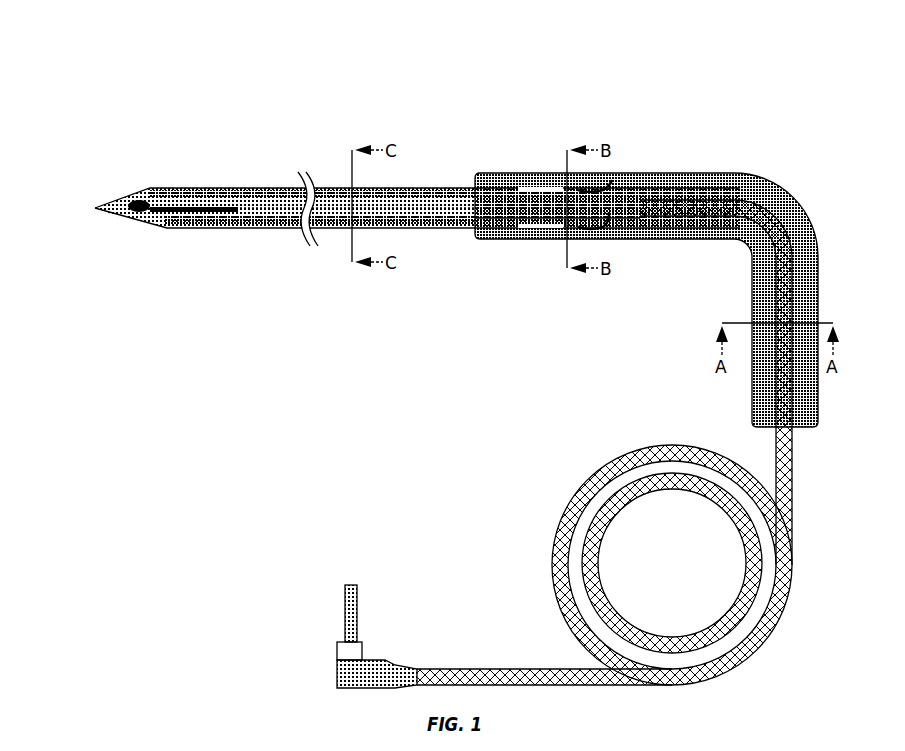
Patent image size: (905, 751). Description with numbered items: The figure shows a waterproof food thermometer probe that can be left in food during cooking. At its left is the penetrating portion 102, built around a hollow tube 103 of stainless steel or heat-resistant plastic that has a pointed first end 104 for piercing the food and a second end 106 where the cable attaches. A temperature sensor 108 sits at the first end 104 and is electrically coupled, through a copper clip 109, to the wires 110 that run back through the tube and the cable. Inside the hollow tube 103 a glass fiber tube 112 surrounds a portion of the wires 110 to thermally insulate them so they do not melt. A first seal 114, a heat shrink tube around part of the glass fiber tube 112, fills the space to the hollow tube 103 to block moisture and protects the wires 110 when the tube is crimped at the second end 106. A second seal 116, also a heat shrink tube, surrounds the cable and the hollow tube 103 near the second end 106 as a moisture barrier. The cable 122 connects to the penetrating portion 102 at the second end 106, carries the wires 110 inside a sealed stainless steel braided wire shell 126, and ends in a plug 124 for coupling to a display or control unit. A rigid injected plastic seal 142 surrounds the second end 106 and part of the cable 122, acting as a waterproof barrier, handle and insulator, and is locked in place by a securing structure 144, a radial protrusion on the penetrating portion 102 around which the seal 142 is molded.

The penetrating portion 102 is at (450, 306).
The hollow tube 103 is at (247, 188).
The first end 104 is at (94, 208).
The second end 106 is at (608, 210).
The temperature sensor 108 is at (135, 197).
The copper clip 109 is at (218, 193).
The wires 110 is at (690, 456).
The glass fiber tube 112 is at (340, 186).
The first seal 114 is at (490, 222).
The second seal 116 is at (612, 183).
The cable 122 is at (487, 670).
The plug 124 is at (341, 652).
The braided wire shell 126 is at (780, 453).
The seal 142 is at (512, 175).
The securing structure 144 is at (539, 184).